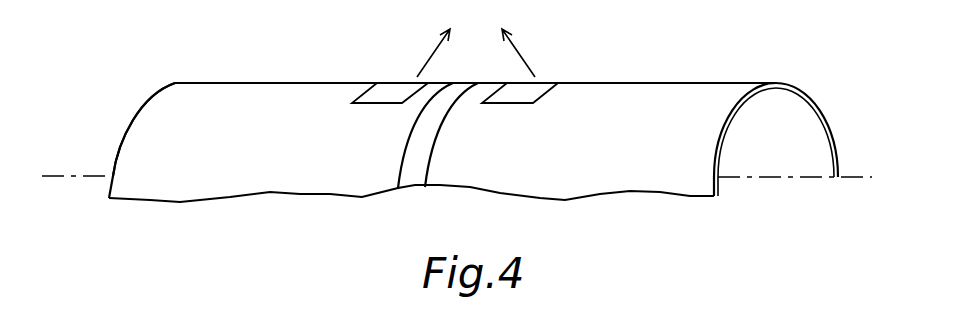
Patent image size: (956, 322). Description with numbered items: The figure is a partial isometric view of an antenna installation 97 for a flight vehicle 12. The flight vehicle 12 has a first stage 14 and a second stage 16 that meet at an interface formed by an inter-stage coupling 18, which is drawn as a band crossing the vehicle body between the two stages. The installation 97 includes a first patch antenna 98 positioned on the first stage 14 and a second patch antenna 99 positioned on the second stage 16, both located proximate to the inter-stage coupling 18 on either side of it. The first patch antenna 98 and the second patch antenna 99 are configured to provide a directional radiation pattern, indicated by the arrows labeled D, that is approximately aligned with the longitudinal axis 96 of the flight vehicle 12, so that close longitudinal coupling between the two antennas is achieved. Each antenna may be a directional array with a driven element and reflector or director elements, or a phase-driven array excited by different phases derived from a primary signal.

The flight vehicle 12 is at (795, 63).
The first stage 14 is at (675, 82).
The second stage 16 is at (272, 82).
The inter-stage coupling 18 is at (411, 188).
The longitudinal axis 96 is at (856, 176).
The antenna installation 97 is at (572, 37).
The first patch antenna 98 is at (508, 105).
The second patch antenna 99 is at (378, 105).